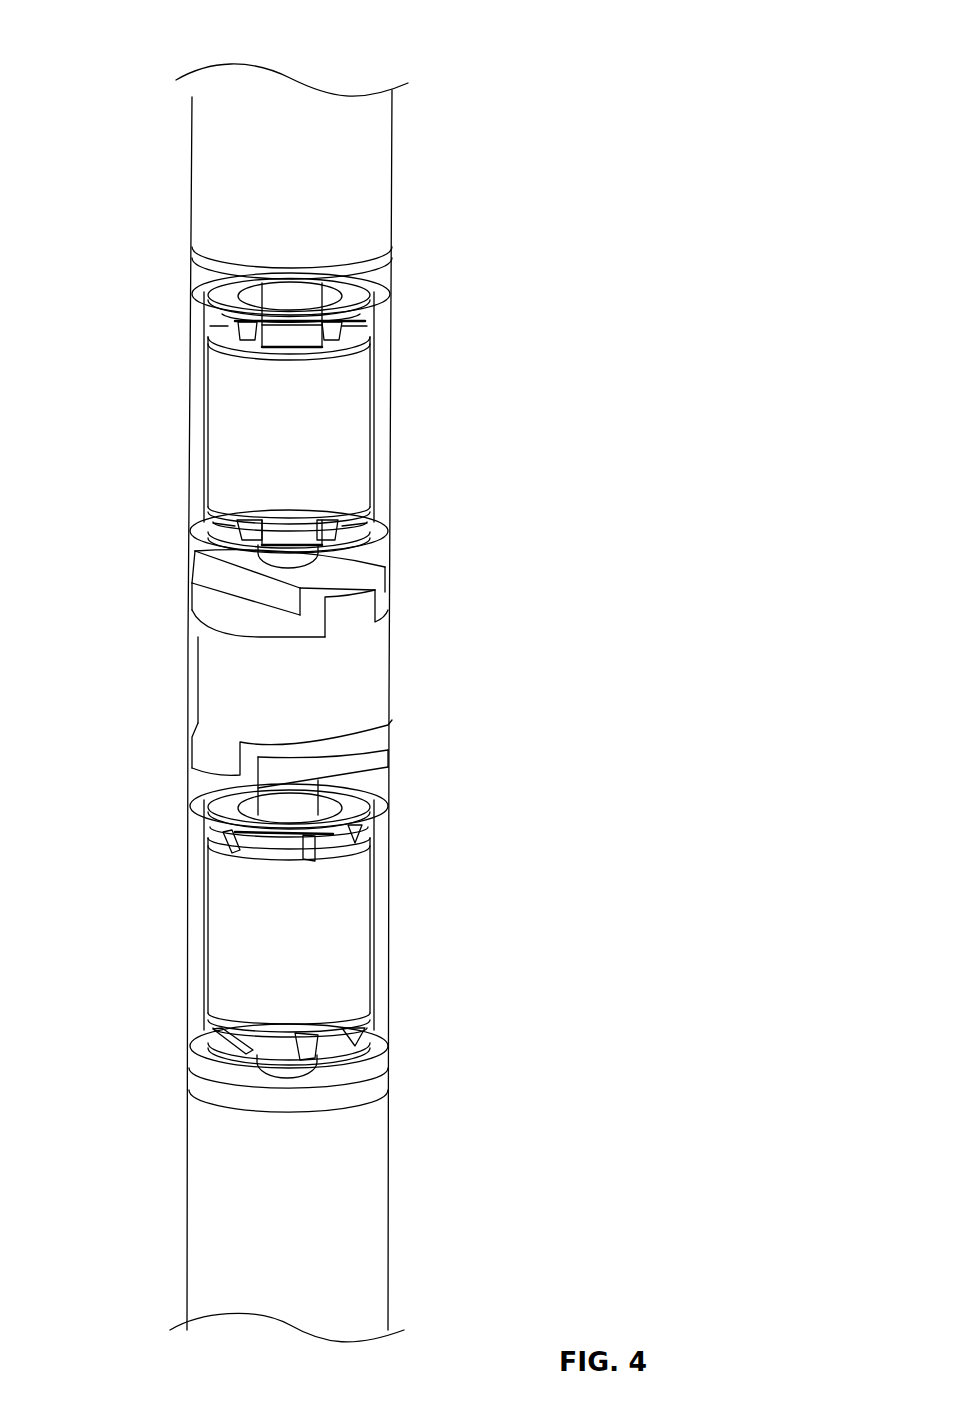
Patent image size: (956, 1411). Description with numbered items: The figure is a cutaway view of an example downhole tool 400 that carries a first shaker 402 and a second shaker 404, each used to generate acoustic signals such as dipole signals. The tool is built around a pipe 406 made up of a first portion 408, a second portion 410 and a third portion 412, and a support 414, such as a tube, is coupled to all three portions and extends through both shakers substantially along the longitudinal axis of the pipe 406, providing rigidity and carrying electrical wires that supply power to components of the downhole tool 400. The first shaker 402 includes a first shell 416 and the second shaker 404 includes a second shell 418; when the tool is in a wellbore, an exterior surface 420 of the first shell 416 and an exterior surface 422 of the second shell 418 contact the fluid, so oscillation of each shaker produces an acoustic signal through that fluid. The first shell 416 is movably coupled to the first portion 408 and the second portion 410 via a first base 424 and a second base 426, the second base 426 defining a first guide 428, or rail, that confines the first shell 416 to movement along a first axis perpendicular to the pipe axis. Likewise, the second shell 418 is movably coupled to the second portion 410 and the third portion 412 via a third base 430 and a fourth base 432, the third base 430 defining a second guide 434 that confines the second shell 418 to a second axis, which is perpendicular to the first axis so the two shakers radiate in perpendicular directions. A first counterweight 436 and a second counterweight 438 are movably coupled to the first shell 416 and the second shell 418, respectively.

The downhole tool 400 is at (531, 46).
The first shaker 402 is at (412, 374).
The second shaker 404 is at (412, 882).
The pipe 406 is at (190, 173).
The first portion 408 is at (370, 160).
The second portion 410 is at (372, 660).
The third portion 412 is at (373, 1170).
The support 414 is at (275, 300).
The first shell 416 is at (190, 372).
The second shell 418 is at (190, 905).
The exterior surface 420 is at (197, 452).
The exterior surface 422 is at (190, 988).
The first base 424 is at (372, 262).
The second base 426 is at (200, 611).
The first guide 428 is at (225, 577).
The third base 430 is at (208, 772).
The second guide 434 is at (372, 757).
The fourth base 432 is at (204, 1066).
The first counterweight 436 is at (343, 457).
The second counterweight 438 is at (343, 966).